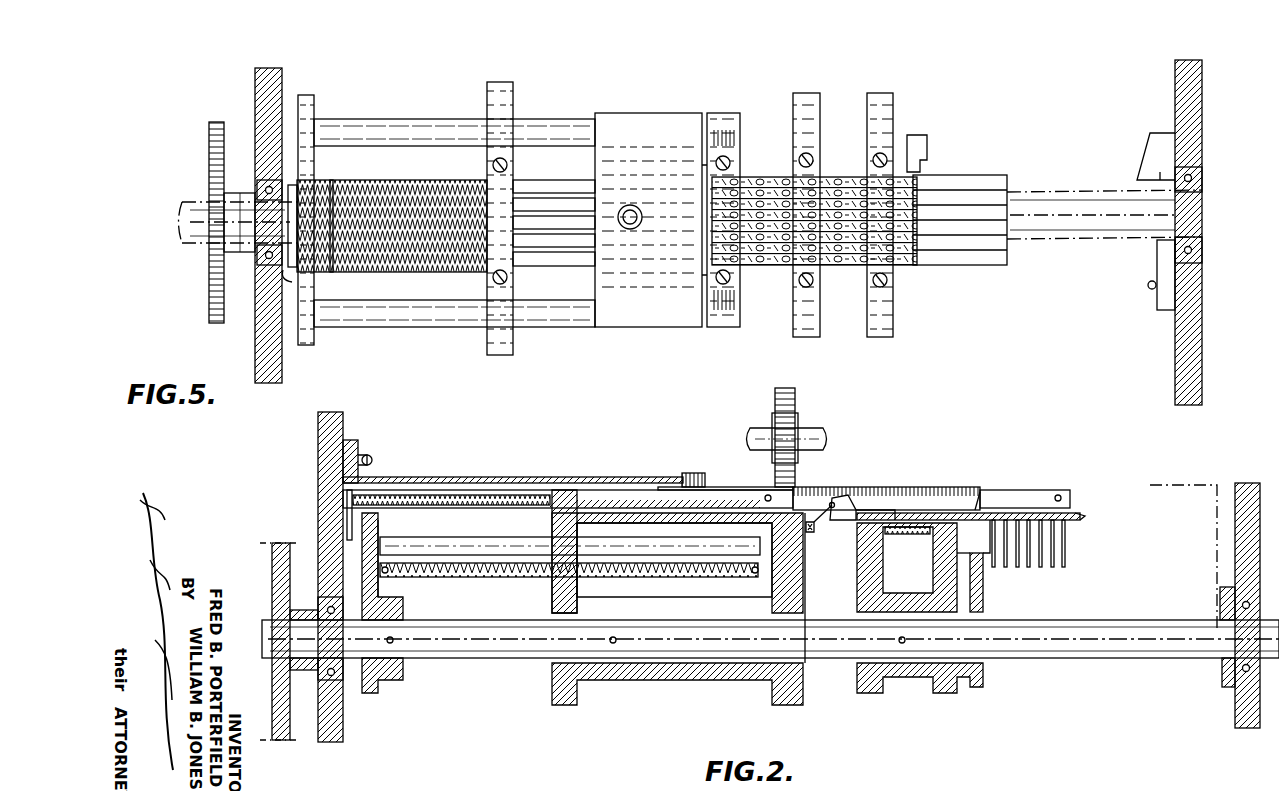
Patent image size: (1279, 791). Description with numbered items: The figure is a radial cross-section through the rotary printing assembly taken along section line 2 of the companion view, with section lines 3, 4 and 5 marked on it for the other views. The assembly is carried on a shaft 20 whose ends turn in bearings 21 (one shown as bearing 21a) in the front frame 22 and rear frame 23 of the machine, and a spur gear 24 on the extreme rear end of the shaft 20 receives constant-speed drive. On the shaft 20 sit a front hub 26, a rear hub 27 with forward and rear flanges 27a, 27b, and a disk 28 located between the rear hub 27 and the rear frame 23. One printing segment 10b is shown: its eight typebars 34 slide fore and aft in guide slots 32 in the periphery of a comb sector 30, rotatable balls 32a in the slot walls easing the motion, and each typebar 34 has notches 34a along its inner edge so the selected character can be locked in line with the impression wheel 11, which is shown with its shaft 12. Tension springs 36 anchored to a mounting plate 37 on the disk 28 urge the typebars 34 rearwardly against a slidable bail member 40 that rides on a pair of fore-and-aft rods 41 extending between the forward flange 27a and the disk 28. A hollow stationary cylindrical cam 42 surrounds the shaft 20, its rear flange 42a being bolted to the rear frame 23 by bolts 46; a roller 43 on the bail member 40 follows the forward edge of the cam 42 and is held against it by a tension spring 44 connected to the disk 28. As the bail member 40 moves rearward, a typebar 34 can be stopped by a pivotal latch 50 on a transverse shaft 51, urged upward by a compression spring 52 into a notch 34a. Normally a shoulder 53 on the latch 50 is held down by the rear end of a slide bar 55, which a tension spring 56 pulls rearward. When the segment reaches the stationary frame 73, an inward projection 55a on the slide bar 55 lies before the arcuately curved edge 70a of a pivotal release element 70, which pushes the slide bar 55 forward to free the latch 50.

In FIG. 5, the section line 2— 2 is at (172, 215).
In FIG. 2, the section line 3— 3 is at (540, 470).
In FIG. 2, the section line 4— 4 is at (347, 505).
In FIG. 2, the section line 5— 5 is at (245, 618).
In FIG. 2, the printing segment 10b is at (1094, 493).
In FIG. 2, the impression wheel 11 is at (775, 400).
In FIG. 2, the gear shaft 12 is at (812, 428).
In FIG. 5, the shaft 20 is at (190, 245).
In FIG. 2, the shaft 20 is at (1118, 620).
In FIG. 5, the bearings 21 is at (260, 186).
In FIG. 2, the bearings 21 is at (318, 604).
In FIG. 2, the bearing 21a is at (1222, 680).
In FIG. 5, the front frame 22 is at (1175, 352).
In FIG. 2, the front frame 22 is at (1235, 722).
In FIG. 5, the rear frame 23 is at (282, 362).
In FIG. 2, the rear frame 23 is at (343, 742).
In FIG. 5, the spur gear 24 is at (209, 150).
In FIG. 2, the spur gear 24 is at (290, 728).
In FIG. 5, the front hub 26 is at (793, 103).
In FIG. 2, the front hub 26 is at (905, 593).
In FIG. 5, the rear hub 27 is at (490, 352).
In FIG. 2, the rear hub 27 is at (645, 602).
In FIG. 2, the forward flange 27a is at (806, 570).
In FIG. 5, the rear flange 27b is at (490, 283).
In FIG. 2, the rear flange 27b is at (580, 580).
In FIG. 5, the disk 28 is at (335, 180).
In FIG. 2, the disk 28 is at (403, 600).
In FIG. 5, the comb sector 30 is at (565, 270).
In FIG. 2, the comb sector 30 is at (1005, 490).
In FIG. 5, the guide slots 32 is at (555, 182).
In FIG. 2, the guide slots 32 is at (615, 490).
In FIG. 2, the rotatable balls 32a is at (795, 488).
In FIG. 5, the typebars 34 is at (838, 180).
In FIG. 2, the typebars 34 is at (885, 487).
In FIG. 2, the notches 34a is at (983, 492).
In FIG. 5, the tension springs 36 is at (420, 182).
In FIG. 2, the tension springs 36 is at (475, 505).
In FIG. 5, the mounting plate 37 is at (300, 283).
In FIG. 2, the mounting plate 37 is at (347, 522).
In FIG. 5, the slidable bail member 40 is at (590, 300).
In FIG. 2, the slidable bail member 40 is at (725, 487).
In FIG. 5, the fore-and-aft rods 41 is at (410, 120).
In FIG. 2, the fore-and-aft rods 41 is at (412, 537).
In FIG. 2, the cylindrical cam 42 is at (445, 477).
In FIG. 2, the flange 42a is at (358, 445).
In FIG. 5, the roller 43 is at (632, 205).
In FIG. 2, the roller 43 is at (693, 473).
In FIG. 2, the tension spring 44 is at (500, 578).
In FIG. 2, the bolts 46 is at (372, 460).
In FIG. 2, the pivotal latch 50 is at (845, 495).
In FIG. 2, the transverse shaft 51 is at (820, 515).
In FIG. 2, the compression spring 52 is at (812, 533).
In FIG. 2, the shoulder 53 is at (860, 522).
In FIG. 2, the slide bar 55 is at (1082, 513).
In FIG. 2, the inward projections 55a is at (1085, 519).
In FIG. 2, the tension spring 56 is at (905, 534).
In FIG. 2, the release elements 70 is at (1005, 560).
In FIG. 2, the arcuately curved edge 70a is at (990, 535).
In FIG. 5, the stationary frame 73 is at (912, 135).
In FIG. 2, the stationary frame 73 is at (985, 600).